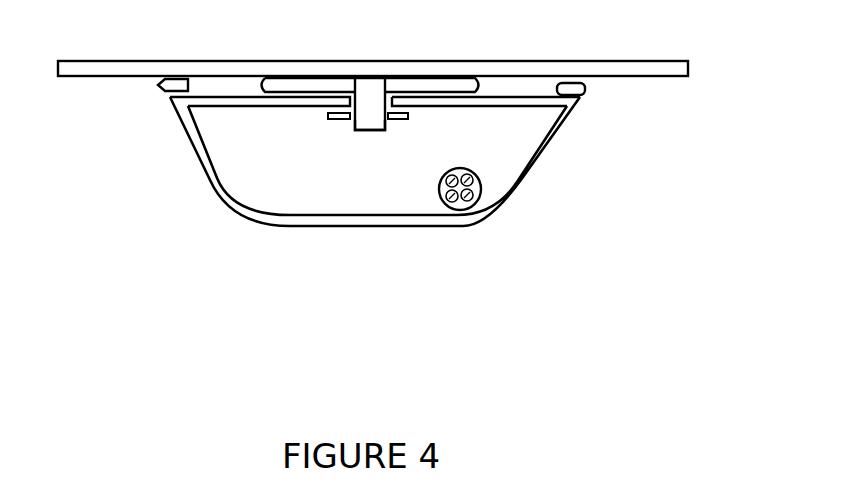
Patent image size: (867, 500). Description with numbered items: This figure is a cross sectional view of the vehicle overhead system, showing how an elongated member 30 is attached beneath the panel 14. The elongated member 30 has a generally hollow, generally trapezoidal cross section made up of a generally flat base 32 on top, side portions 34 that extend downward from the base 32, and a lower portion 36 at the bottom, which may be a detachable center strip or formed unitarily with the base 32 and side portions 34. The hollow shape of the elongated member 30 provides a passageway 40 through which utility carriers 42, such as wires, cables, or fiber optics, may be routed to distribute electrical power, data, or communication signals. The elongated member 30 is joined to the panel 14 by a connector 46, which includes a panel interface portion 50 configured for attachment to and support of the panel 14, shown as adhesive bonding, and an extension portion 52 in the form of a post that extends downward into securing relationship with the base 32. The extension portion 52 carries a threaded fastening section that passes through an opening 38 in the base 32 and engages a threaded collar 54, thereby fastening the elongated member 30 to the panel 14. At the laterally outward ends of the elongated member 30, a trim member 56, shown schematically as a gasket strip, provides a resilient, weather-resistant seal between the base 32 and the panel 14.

The panel 14 is at (653, 61).
The elongated member 30 is at (382, 192).
The base 32 is at (252, 107).
The side portions 34 is at (210, 178).
The lower portion 36 is at (367, 227).
The opening 38 is at (356, 90).
The passageway 40 is at (305, 178).
The utility carriers 42 is at (460, 168).
The connector 46 is at (379, 90).
The panel interface portion 50 is at (477, 88).
The extension portion 52 is at (367, 131).
The threaded collar 54 is at (338, 120).
The trim member 56 is at (158, 84).